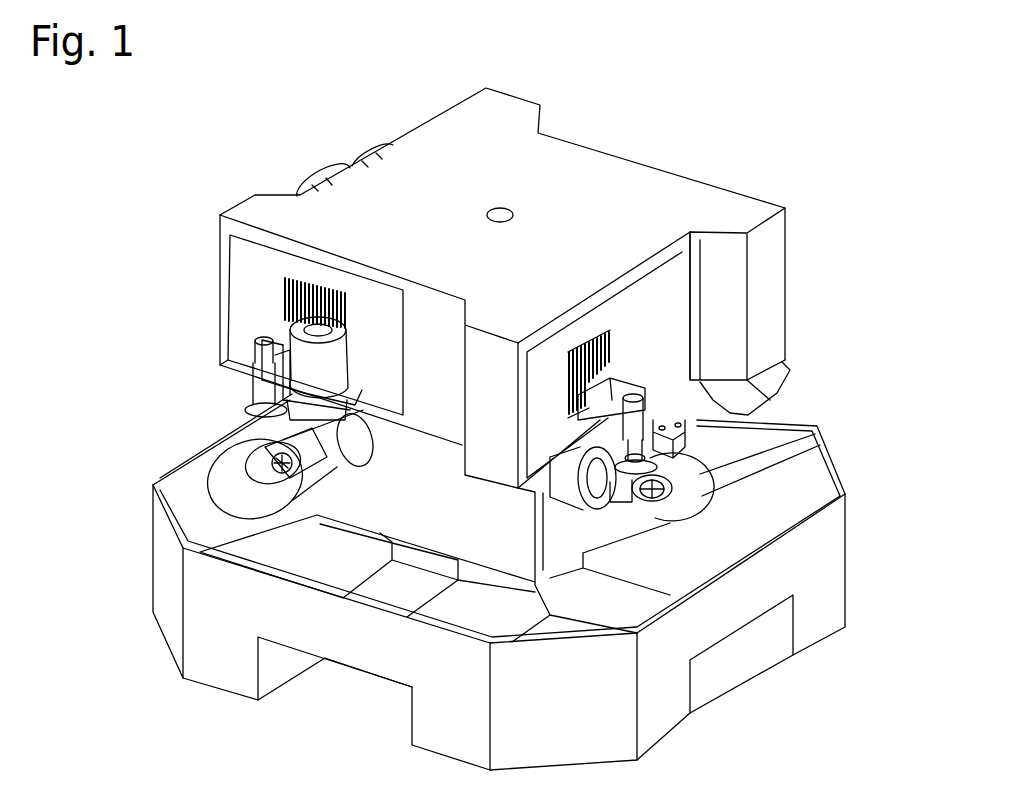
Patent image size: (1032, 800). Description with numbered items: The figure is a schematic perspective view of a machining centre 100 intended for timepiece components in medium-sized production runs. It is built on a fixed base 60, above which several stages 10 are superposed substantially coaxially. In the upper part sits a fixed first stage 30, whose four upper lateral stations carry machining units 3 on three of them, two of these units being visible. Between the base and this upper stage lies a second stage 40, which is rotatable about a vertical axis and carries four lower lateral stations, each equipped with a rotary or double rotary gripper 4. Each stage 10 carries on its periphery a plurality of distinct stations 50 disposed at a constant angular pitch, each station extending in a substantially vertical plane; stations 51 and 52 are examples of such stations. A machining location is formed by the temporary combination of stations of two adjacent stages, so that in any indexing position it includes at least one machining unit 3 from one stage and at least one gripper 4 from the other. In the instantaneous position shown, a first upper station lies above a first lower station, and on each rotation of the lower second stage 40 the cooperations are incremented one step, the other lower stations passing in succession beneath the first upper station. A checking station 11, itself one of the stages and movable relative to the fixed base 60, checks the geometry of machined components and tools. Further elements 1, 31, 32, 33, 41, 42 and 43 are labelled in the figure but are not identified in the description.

The machining centre 100 is at (431, 100).
The machine bed 1 is at (748, 518).
The machining unit 3 is at (690, 330).
The gripper 4 is at (713, 522).
The stage 10 is at (206, 255).
The checking station 11 is at (648, 484).
The first stage 30 is at (783, 280).
The drive motor 31 is at (253, 378).
The tool spindle head 32 is at (362, 357).
The ventilation louver 33 is at (650, 370).
The second stage 40 is at (674, 478).
The motor 41 is at (237, 488).
The spindle housing 42 is at (683, 506).
The support block 43 is at (768, 387).
The station 50 is at (277, 266).
The station 51 is at (368, 354).
The station 52 is at (706, 352).
The fixed base 60 is at (658, 715).